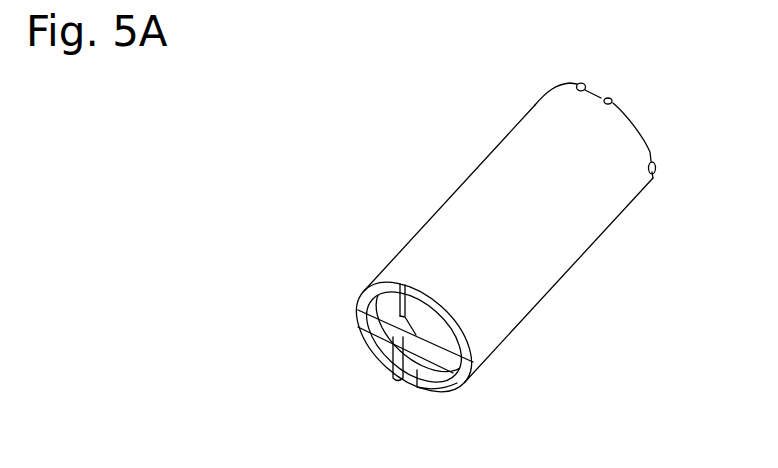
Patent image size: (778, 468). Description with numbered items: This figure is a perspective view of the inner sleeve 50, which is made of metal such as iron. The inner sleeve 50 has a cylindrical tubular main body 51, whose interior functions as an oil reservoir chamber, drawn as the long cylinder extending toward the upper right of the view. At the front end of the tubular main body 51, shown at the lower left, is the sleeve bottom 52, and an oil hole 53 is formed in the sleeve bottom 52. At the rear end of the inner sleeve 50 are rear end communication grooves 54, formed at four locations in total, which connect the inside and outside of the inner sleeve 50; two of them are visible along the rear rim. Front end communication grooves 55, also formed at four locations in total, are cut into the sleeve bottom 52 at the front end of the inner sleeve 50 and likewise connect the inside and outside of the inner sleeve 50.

The inner sleeve 50 is at (449, 135).
The tubular main body 51 is at (538, 225).
The sleeve bottom 52 is at (447, 332).
The oil hole 53 is at (396, 352).
The rear end communication grooves 54 is at (600, 92).
The front end communication grooves 55 is at (401, 284).